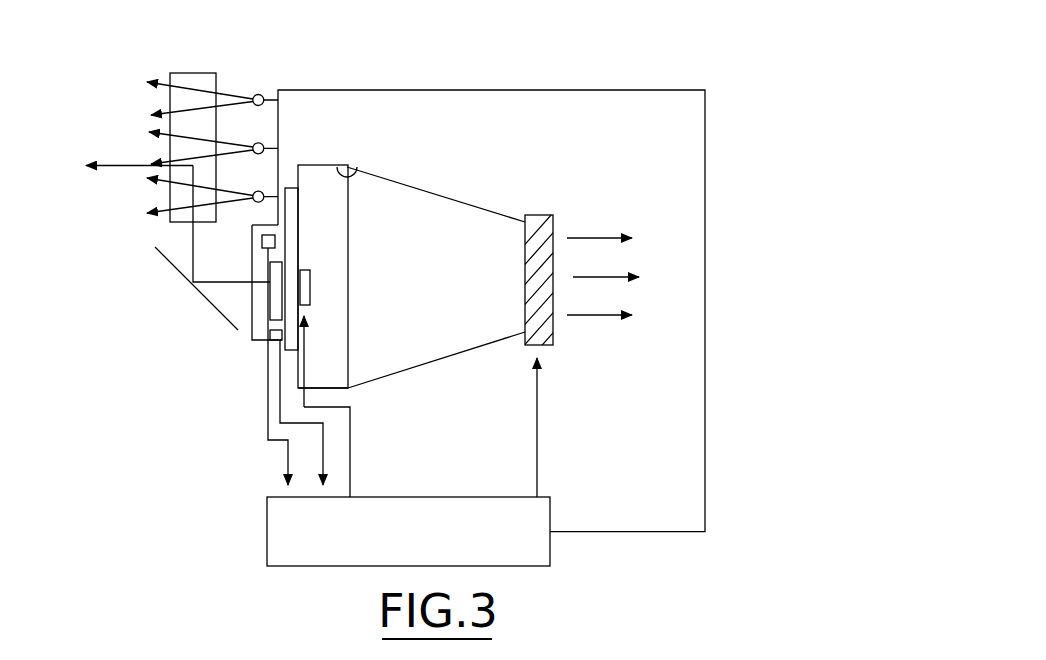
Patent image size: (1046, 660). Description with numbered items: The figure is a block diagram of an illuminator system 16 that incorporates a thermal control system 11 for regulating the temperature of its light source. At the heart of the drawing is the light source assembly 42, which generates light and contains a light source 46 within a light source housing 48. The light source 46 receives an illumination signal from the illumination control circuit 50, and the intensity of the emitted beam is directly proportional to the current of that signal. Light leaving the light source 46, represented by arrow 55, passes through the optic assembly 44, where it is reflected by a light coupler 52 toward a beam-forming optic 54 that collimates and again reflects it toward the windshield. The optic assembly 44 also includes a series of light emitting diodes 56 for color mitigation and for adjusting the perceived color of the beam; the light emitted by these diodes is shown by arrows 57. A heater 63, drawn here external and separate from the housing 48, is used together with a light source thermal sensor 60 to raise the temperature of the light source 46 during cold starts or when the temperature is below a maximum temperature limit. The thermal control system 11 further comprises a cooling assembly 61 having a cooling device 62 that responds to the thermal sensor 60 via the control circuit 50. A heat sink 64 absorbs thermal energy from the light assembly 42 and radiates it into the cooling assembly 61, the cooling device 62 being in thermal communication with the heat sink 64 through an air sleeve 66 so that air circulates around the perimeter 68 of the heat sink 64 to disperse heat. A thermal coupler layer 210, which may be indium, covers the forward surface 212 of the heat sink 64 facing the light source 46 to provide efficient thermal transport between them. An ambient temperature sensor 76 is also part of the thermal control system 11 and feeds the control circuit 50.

The thermal control system 11 is at (211, 510).
The illuminator system 16 is at (756, 101).
The light source assembly 42 is at (247, 335).
The optic assembly 44 is at (128, 244).
The light source 46 is at (270, 268).
The light source housing 48 is at (251, 233).
The illumination control circuit 50 is at (452, 495).
The light coupler 52 is at (167, 262).
The beam-forming optic 54 is at (193, 73).
The arrow representing light from light source 55 is at (217, 285).
The light emitting diodes 56 is at (263, 190).
The arrows representing LED light 57 is at (160, 158).
The light source thermal sensor 60 is at (262, 337).
The cooling assembly 61 is at (448, 193).
The cooling device 62 is at (553, 218).
The heater 63 is at (312, 280).
The heat sink 64 is at (345, 390).
The air sleeve 66 is at (447, 352).
The perimeter of heat sink 68 is at (355, 177).
The ambient temperature sensor 76 is at (275, 240).
The thermal coupler layer 210 is at (290, 358).
The forward surface 212 is at (280, 350).